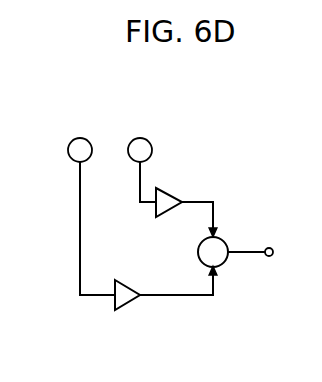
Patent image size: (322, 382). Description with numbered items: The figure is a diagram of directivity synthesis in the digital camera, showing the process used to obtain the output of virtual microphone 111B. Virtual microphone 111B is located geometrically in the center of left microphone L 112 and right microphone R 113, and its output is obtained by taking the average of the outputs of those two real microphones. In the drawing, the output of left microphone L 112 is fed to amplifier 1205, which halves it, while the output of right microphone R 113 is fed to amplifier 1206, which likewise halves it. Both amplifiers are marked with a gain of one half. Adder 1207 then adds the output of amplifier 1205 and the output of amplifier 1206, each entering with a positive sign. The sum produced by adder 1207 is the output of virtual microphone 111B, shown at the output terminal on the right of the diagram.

The left microphone L 112 is at (84, 138).
The right microphone R 113 is at (141, 138).
The amplifier 1205 is at (126, 305).
The amplifier 1206 is at (178, 197).
The adder 1207 is at (225, 263).
The virtual microphone 111B is at (275, 248).